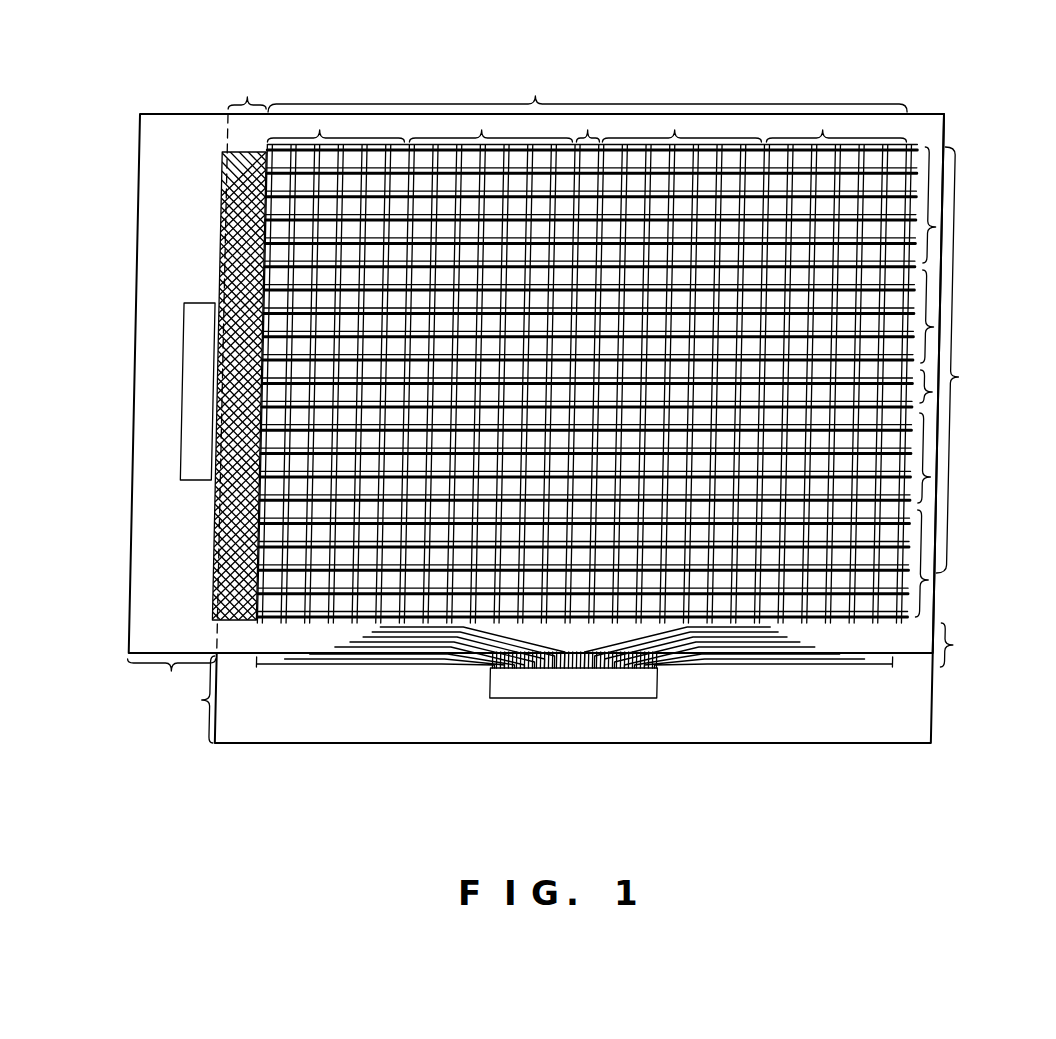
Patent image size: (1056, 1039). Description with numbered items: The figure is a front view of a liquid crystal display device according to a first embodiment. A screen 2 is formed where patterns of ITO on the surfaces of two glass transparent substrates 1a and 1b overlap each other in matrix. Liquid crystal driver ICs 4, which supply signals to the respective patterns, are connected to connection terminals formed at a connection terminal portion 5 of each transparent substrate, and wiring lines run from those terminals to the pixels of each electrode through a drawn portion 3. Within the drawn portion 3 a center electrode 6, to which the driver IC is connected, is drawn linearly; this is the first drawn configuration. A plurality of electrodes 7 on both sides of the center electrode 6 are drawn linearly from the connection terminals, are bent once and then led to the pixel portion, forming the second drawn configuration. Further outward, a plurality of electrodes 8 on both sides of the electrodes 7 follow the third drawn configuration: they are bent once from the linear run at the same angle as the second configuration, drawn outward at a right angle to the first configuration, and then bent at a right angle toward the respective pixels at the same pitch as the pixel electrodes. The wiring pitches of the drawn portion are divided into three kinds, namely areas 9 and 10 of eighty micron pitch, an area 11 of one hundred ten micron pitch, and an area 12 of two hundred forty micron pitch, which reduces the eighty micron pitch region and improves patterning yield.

The glass transparent substrate 1a is at (142, 620).
The glass transparent substrate 1b is at (283, 748).
The screen 2 is at (610, 363).
The drawn portion 3 is at (596, 367).
The liquid crystal driver IC 4 is at (185, 395).
The connection terminal portion 5 is at (171, 699).
The center electrode 6 is at (585, 142).
The electrodes 7 is at (482, 128).
The electrodes 8 is at (320, 128).
The area of 80 micron pitch 9 is at (215, 330).
The area of 80 micron pitch 10 is at (222, 291).
The area of 110 micron pitch 11 is at (222, 233).
The area of 240 micron pitch 12 is at (222, 168).